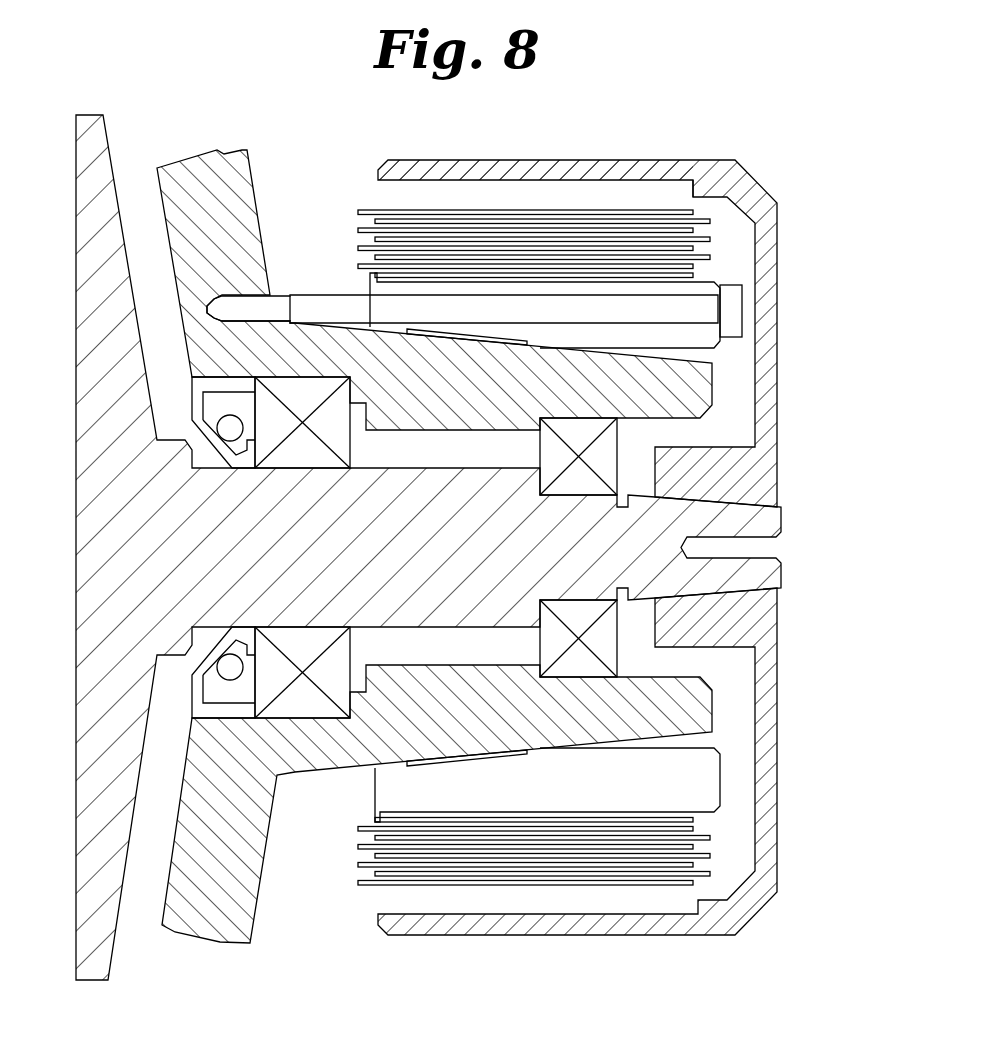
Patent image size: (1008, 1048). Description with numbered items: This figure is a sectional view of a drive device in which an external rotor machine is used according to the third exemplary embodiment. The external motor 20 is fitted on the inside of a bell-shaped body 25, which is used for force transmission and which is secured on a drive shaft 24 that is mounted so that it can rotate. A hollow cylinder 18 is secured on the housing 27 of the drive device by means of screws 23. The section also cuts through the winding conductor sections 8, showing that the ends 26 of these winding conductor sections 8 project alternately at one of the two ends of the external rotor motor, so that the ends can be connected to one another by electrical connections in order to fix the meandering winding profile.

The winding conductor sections 8 is at (407, 267).
The hollow cylinder 18 is at (714, 782).
The external motor 20 is at (626, 190).
The screws 23 is at (732, 313).
The drive shaft 24 is at (768, 521).
The bell-shaped body 25 is at (740, 163).
The ends 26 is at (700, 253).
The housing 27 is at (205, 197).